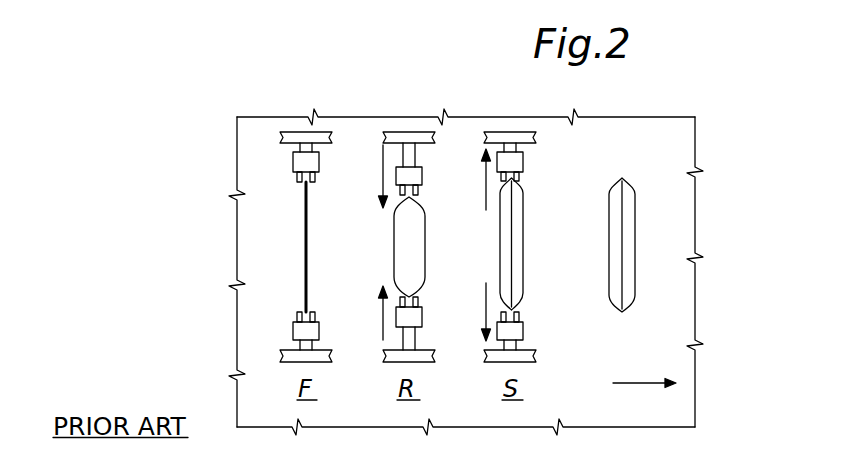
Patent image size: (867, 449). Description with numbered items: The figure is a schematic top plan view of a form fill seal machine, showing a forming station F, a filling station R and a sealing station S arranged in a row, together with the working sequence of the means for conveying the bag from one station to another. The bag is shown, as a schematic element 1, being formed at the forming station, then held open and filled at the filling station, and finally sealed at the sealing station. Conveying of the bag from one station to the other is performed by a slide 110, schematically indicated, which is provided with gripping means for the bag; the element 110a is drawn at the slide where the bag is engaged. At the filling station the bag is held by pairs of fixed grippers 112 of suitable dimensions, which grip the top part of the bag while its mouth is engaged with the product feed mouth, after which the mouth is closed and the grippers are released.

The thread / bobbin 1 is at (305, 258).
The slide 110 is at (408, 135).
The clamping jaw 110a is at (297, 172).
The fixed grippers 112 is at (413, 178).